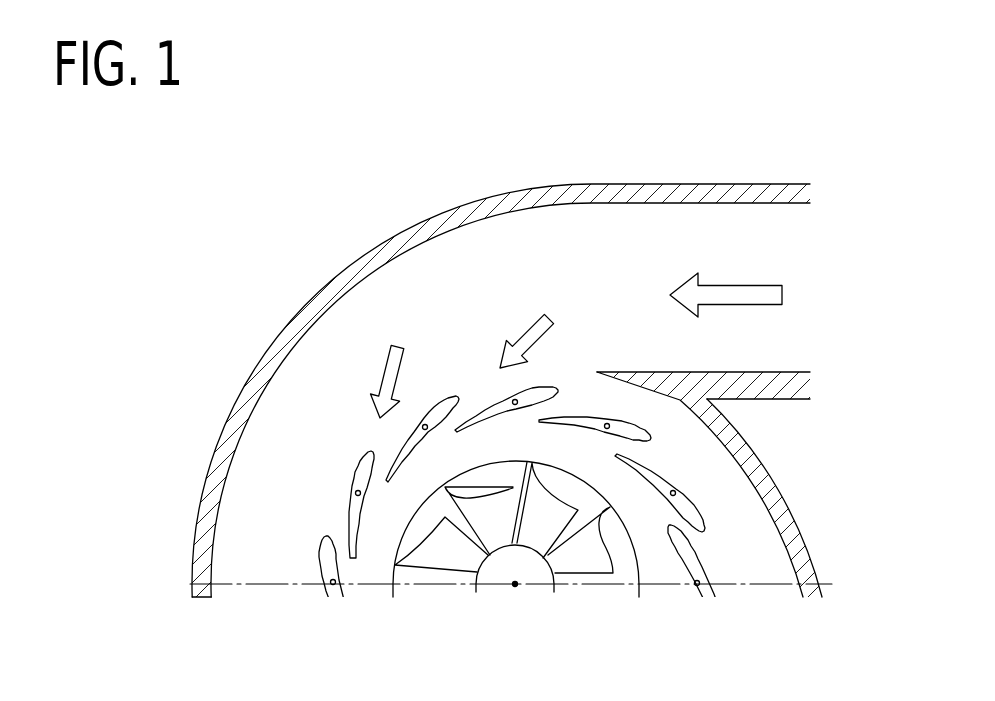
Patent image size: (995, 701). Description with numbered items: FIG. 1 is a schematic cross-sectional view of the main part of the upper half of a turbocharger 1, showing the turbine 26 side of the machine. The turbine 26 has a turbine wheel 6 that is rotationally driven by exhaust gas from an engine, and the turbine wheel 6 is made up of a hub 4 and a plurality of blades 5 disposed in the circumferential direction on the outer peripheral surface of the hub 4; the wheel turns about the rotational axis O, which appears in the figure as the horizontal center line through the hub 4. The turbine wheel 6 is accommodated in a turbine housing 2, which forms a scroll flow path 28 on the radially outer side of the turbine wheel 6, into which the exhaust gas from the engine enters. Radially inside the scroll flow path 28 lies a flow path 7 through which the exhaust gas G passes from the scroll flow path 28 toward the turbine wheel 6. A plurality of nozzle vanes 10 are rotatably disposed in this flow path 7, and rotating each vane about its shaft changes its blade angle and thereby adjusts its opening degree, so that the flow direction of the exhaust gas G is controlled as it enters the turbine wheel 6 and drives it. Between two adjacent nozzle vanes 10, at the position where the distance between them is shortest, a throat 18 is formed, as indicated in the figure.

The turbocharger 1 is at (183, 143).
The turbine housing 2 is at (663, 185).
The turbine 26 is at (773, 175).
The scroll flow path 28 is at (413, 283).
The exhaust gas G is at (548, 315).
The flow path 7 is at (337, 522).
The throat 18 is at (651, 456).
The nozzle vane 10 is at (698, 508).
The turbine wheel 6 is at (490, 597).
The hub 4 is at (523, 570).
The rotational axis O is at (515, 586).
The blades 5 is at (580, 560).